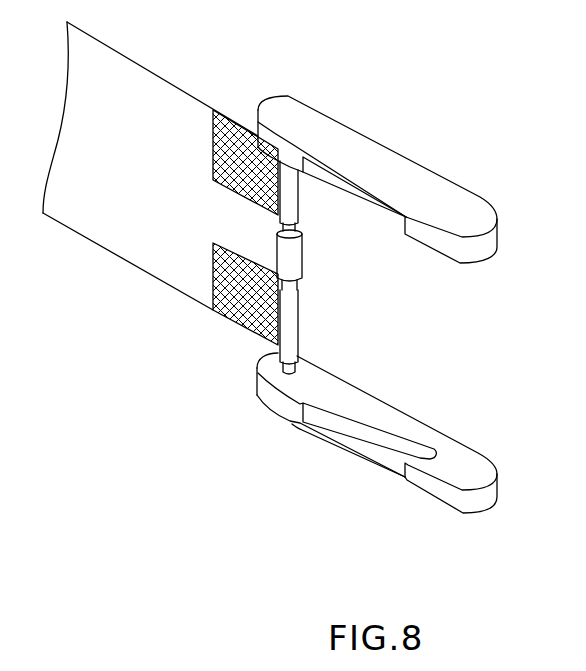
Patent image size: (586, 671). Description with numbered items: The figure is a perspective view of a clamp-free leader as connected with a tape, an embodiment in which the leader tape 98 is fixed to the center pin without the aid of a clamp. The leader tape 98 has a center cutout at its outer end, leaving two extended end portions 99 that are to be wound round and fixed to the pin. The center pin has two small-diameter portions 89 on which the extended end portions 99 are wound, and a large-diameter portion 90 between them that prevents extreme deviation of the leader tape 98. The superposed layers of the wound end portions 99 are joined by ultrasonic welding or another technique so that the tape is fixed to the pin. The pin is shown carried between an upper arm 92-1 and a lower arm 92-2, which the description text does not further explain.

The leader tape 98 is at (147, 68).
The extended end portions 99 is at (243, 168).
The upper clamp arm 92-1 is at (361, 148).
The lower clamp arm 92-2 is at (452, 503).
The small-diameter portions 89 is at (296, 287).
The large-diameter portion 90 is at (292, 252).